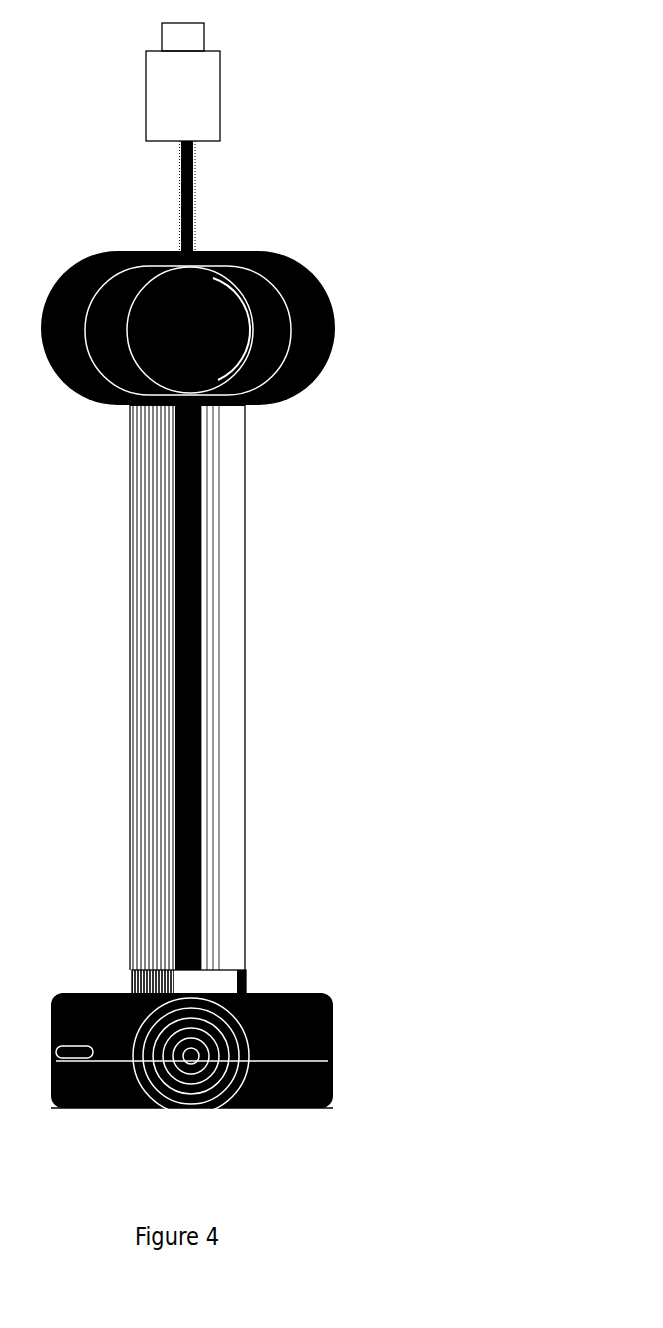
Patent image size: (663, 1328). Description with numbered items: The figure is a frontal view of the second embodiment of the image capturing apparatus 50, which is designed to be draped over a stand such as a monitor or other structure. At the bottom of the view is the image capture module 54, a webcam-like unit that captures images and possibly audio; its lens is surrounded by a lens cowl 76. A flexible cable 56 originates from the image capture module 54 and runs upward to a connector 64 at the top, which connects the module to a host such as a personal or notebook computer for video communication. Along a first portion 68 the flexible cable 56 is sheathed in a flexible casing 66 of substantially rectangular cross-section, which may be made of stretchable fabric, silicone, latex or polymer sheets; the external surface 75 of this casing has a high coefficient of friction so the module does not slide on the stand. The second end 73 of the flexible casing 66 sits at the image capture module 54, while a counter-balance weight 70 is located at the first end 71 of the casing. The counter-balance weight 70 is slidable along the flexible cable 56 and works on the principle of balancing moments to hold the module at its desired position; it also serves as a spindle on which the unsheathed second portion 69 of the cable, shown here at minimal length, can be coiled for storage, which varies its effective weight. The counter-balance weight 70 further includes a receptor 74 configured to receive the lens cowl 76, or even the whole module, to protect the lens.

The image capturing apparatus 50 is at (383, 502).
The image capture module 54 is at (323, 1033).
The flexible cable 56 is at (177, 223).
The connector 64 is at (196, 70).
The flexible casing 66 is at (205, 677).
The first portion 68 is at (205, 782).
The second portion 69 is at (175, 163).
The counter-balance weight 70 is at (318, 298).
The first end 71 is at (160, 400).
The second end 73 is at (187, 957).
The receptor 74 is at (215, 298).
The external surface 75 is at (223, 605).
The lens cowl 76 is at (147, 1093).